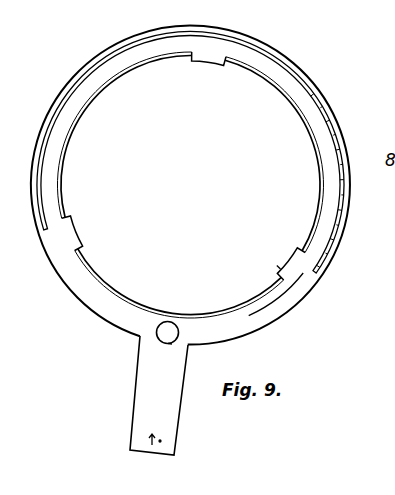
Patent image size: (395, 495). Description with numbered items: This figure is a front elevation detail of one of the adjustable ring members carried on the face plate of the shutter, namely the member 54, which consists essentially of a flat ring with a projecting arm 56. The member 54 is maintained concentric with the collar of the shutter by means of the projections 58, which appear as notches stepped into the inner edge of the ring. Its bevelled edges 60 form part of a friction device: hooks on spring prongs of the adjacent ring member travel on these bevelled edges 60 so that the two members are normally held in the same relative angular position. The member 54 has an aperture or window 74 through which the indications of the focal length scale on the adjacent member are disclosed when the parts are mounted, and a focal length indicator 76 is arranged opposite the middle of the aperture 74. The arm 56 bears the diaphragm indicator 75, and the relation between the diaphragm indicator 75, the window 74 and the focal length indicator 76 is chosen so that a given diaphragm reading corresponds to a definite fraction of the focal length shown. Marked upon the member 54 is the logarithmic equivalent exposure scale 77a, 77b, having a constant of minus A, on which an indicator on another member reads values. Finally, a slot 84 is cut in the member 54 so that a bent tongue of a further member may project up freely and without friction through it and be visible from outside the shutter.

The member 54 is at (100, 298).
The projecting arm 56 is at (148, 403).
The projections 58 is at (220, 63).
The bevelled edges 60 is at (78, 117).
The aperture or window 74 is at (173, 322).
The diaphragm indicator 75 is at (149, 444).
The focal length indicator 76 is at (172, 344).
The equivalent exposure scale 77a is at (287, 272).
The equivalent exposure scale 77b is at (312, 100).
The slot 84 is at (62, 100).